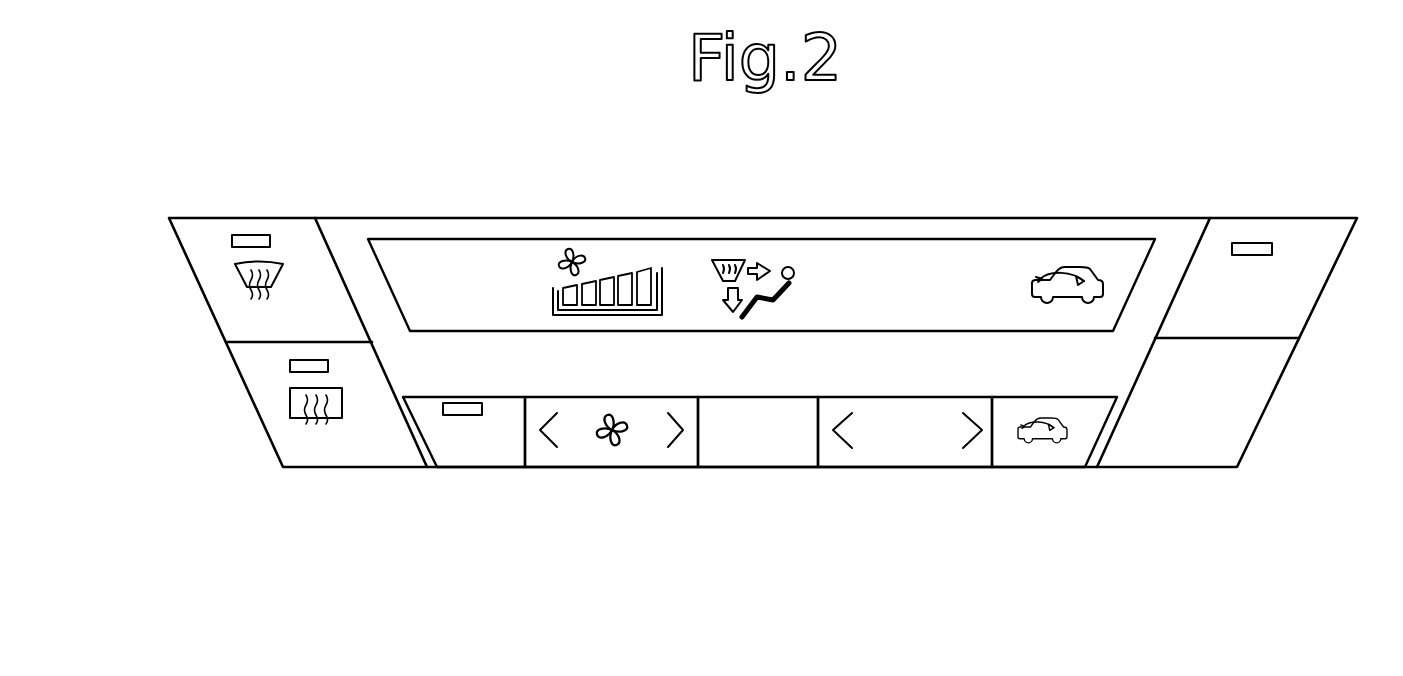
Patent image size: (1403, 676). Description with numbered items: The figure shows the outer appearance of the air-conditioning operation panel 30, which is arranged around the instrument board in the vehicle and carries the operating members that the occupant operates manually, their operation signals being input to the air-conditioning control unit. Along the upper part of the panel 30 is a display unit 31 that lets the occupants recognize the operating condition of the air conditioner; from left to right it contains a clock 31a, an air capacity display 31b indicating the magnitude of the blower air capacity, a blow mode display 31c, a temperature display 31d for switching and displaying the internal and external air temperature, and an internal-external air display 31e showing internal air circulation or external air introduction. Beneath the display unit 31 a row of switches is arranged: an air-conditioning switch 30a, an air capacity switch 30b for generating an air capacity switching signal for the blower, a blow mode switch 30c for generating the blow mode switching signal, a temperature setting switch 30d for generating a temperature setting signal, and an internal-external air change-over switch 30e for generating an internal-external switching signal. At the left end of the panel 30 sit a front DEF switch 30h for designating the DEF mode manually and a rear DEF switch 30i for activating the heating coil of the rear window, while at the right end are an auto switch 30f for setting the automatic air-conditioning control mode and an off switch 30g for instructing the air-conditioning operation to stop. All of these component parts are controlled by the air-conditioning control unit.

The air-conditioning operation panel 30 is at (335, 218).
The display unit 31 is at (403, 239).
The clock 31a is at (488, 248).
The air capacity display 31b is at (613, 250).
The blow mode display 31c is at (753, 255).
The temperature display 31d is at (913, 250).
The internal-external air display 31e is at (1073, 255).
The A/C switch 30a is at (473, 452).
The air capacity switch 30b is at (615, 452).
The blow mode switch 30c is at (747, 452).
The temperature setting switch 30d is at (888, 452).
The internal-external air change-over switch 30e is at (1047, 452).
The auto switch 30f is at (1295, 297).
The off switch 30g is at (1182, 450).
The front DEF switch 30h is at (212, 273).
The rear DEF switch 30i is at (267, 402).